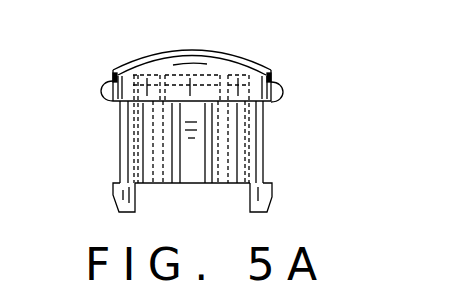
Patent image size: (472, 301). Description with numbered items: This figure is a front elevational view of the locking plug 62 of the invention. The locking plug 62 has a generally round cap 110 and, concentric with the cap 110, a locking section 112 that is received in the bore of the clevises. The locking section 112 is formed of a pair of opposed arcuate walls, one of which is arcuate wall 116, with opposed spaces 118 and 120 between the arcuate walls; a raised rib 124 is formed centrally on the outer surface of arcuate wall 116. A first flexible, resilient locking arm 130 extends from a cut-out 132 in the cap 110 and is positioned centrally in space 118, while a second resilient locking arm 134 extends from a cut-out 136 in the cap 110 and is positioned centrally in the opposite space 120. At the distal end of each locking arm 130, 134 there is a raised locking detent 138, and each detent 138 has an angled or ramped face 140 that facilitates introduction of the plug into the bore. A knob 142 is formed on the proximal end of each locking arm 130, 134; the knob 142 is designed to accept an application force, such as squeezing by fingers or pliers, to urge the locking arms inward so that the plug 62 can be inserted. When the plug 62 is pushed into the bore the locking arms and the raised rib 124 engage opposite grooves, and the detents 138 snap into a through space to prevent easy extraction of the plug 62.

The locking plug 62 is at (203, 46).
The cap 110 is at (257, 72).
The locking section 112 is at (119, 148).
The arcuate wall 116 is at (231, 170).
The space 118 is at (134, 157).
The space 120 is at (252, 146).
The raised rib 124 is at (191, 162).
The first locking arm 130 is at (120, 117).
The cut-out 132 is at (112, 73).
The second locking arm 134 is at (258, 170).
The cut-out 136 is at (272, 78).
The locking detent 138 is at (130, 197).
The ramped face 140 is at (112, 193).
The knob 142 is at (105, 88).